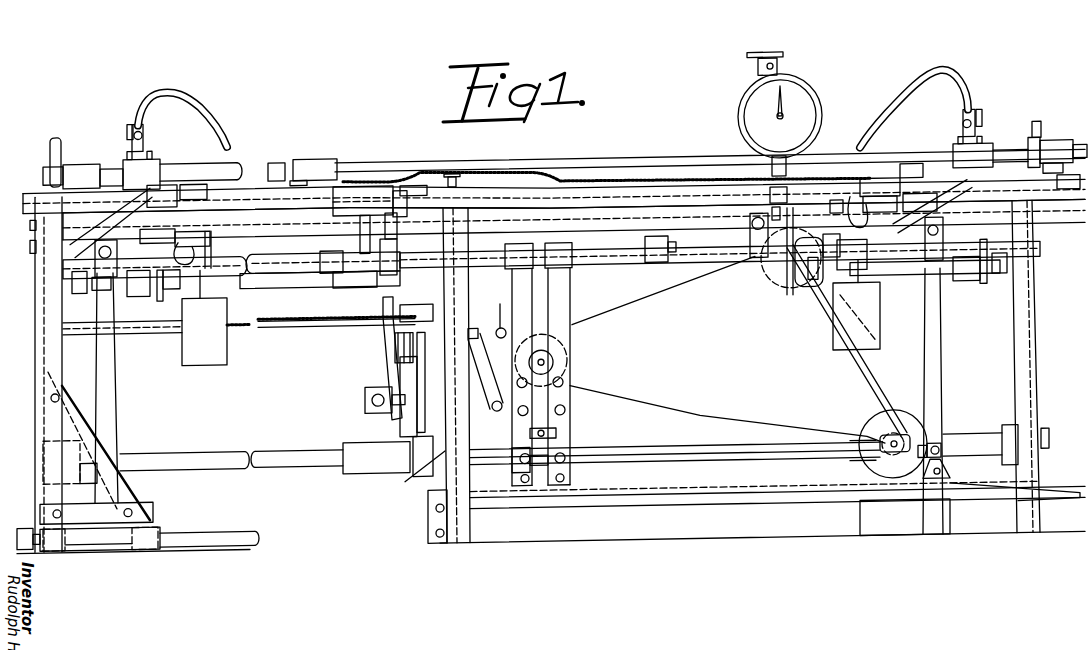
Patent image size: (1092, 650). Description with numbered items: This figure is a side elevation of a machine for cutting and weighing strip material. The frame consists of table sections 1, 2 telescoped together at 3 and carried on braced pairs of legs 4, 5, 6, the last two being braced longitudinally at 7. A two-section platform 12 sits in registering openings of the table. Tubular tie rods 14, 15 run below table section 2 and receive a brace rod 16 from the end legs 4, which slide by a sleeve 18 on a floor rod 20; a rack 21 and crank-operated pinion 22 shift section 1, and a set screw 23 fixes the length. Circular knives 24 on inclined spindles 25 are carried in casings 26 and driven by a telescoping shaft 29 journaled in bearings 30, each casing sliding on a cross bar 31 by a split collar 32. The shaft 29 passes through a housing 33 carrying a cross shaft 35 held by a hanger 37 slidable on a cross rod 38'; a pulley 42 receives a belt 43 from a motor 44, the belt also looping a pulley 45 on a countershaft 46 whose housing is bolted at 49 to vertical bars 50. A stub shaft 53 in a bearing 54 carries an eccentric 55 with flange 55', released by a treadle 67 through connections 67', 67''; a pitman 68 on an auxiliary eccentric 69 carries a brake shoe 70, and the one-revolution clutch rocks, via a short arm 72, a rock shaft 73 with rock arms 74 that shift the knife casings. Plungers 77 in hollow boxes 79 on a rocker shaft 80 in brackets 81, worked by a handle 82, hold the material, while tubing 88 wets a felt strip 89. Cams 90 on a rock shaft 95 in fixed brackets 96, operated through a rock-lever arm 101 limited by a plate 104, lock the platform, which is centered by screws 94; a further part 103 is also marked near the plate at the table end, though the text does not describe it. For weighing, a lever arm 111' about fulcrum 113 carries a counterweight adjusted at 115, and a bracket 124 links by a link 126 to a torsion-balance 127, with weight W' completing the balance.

The table section 1 is at (262, 184).
The table section 2 is at (580, 194).
The telescoping joint 3 is at (385, 183).
The pair of end legs 4 is at (43, 374).
The pair of legs 5 is at (468, 528).
The pair of legs 6 is at (1035, 388).
The longitudinal brace 7 is at (765, 500).
The platform 12 is at (522, 178).
The tubular tie rod 14 is at (610, 266).
The tubular tie rod 15 is at (1003, 213).
The brace rod 16 is at (262, 254).
The sleeve 18 is at (112, 542).
The horizontal rod 20 is at (200, 542).
The rack 21 is at (275, 325).
The crank operated pinion 22 is at (478, 326).
The set screw 23 is at (508, 333).
The circular knife 24 is at (97, 228).
The spindle 25 is at (102, 206).
The casing 26 is at (143, 290).
The telescoping shaft 29 is at (296, 283).
The bearing 30 is at (96, 284).
The cross bar 31 is at (93, 258).
The split collar 32 is at (99, 244).
The housing 33 is at (808, 294).
The cross shaft 35 is at (765, 282).
The hanger 37 is at (822, 258).
The cross rod 38' is at (741, 235).
The pulley 42 is at (770, 298).
The belt 43 is at (703, 418).
The motor 44 is at (868, 462).
The pulley 45 is at (566, 352).
The countershaft 46 is at (556, 362).
The bolts 49 is at (572, 412).
The vertical bars 50 is at (560, 440).
The stub shaft 53 is at (507, 420).
The bearing 54 is at (497, 410).
The eccentric 55 is at (418, 381).
The concentric flange 55' is at (393, 396).
The treadle 67 is at (1015, 482).
The connection 67' is at (413, 475).
The connection 67'' is at (675, 441).
The pitman 68 is at (385, 362).
The auxiliary eccentric 69 is at (370, 408).
The brake shoe 70 is at (382, 355).
The short arm 72 is at (420, 444).
The telescoping rock shaft 73 is at (322, 465).
The rock arm 74 is at (115, 414).
The plunger 77 is at (113, 160).
The hollow box 79 is at (156, 165).
The tubular rocker shaft 80 is at (700, 158).
The bracket 81 is at (82, 156).
The operating handle 82 is at (56, 130).
The tubing 88 is at (211, 93).
The strip of felt 89 is at (145, 152).
The cam 90 is at (165, 226).
The screw 94 is at (165, 180).
The tubular rock shaft 95 is at (622, 216).
The fixed bracket 96 is at (178, 236).
The rock-lever arm 101 is at (1084, 157).
The block 103 is at (1058, 150).
The plate 104 is at (1065, 208).
The lever arm 111' is at (527, 255).
The fulcrum 113 is at (160, 230).
The counterweight adjustment 115 is at (206, 196).
The bracket 124 is at (770, 205).
The link 126 is at (800, 162).
The torsion-balance 127 is at (800, 93).
The weight W' is at (531, 299).